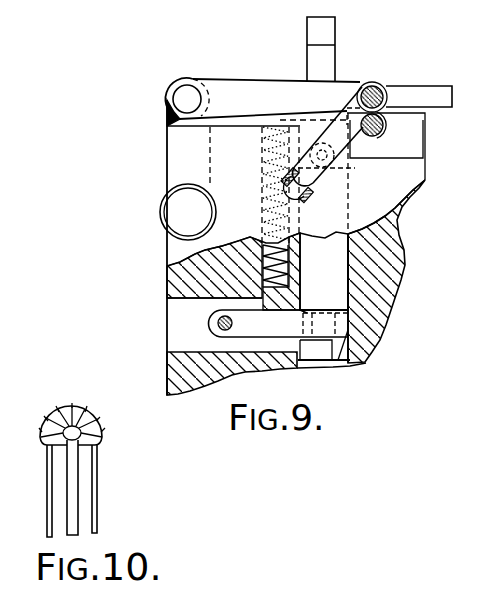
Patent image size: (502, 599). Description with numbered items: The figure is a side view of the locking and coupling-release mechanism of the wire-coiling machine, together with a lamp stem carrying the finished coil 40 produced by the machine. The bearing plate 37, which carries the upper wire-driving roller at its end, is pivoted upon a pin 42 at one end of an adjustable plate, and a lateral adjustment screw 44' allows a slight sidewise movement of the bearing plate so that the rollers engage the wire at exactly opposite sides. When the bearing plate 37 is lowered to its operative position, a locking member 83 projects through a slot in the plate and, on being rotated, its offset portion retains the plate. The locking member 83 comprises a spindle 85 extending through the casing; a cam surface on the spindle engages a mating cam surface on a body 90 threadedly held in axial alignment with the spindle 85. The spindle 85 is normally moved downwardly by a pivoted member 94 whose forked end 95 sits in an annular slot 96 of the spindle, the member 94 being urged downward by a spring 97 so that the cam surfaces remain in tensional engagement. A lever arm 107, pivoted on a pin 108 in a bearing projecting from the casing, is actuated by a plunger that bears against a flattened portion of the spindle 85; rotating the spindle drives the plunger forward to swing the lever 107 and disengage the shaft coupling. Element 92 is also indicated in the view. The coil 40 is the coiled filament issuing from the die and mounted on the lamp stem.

In FIG. 9, the bearing plate 37 is at (259, 78).
In FIG. 9, the pin 42 is at (182, 91).
In FIG. 9, the locking member 83 is at (337, 30).
In FIG. 9, the member 92 is at (385, 4).
In FIG. 9, the body 90 is at (470, 6).
In FIG. 9, the lever arm 107 is at (338, 167).
In FIG. 9, the pin 108 is at (302, 196).
In FIG. 9, the lateral adjustment screw 44' is at (164, 212).
In FIG. 9, the spring 97 is at (262, 262).
In FIG. 9, the spindle 85 is at (335, 260).
In FIG. 9, the pivoted member 94 is at (279, 323).
In FIG. 9, the forked end 95 is at (342, 320).
In FIG. 9, the annular slot 96 is at (342, 336).
In FIG. 10, the coil 40 is at (103, 430).